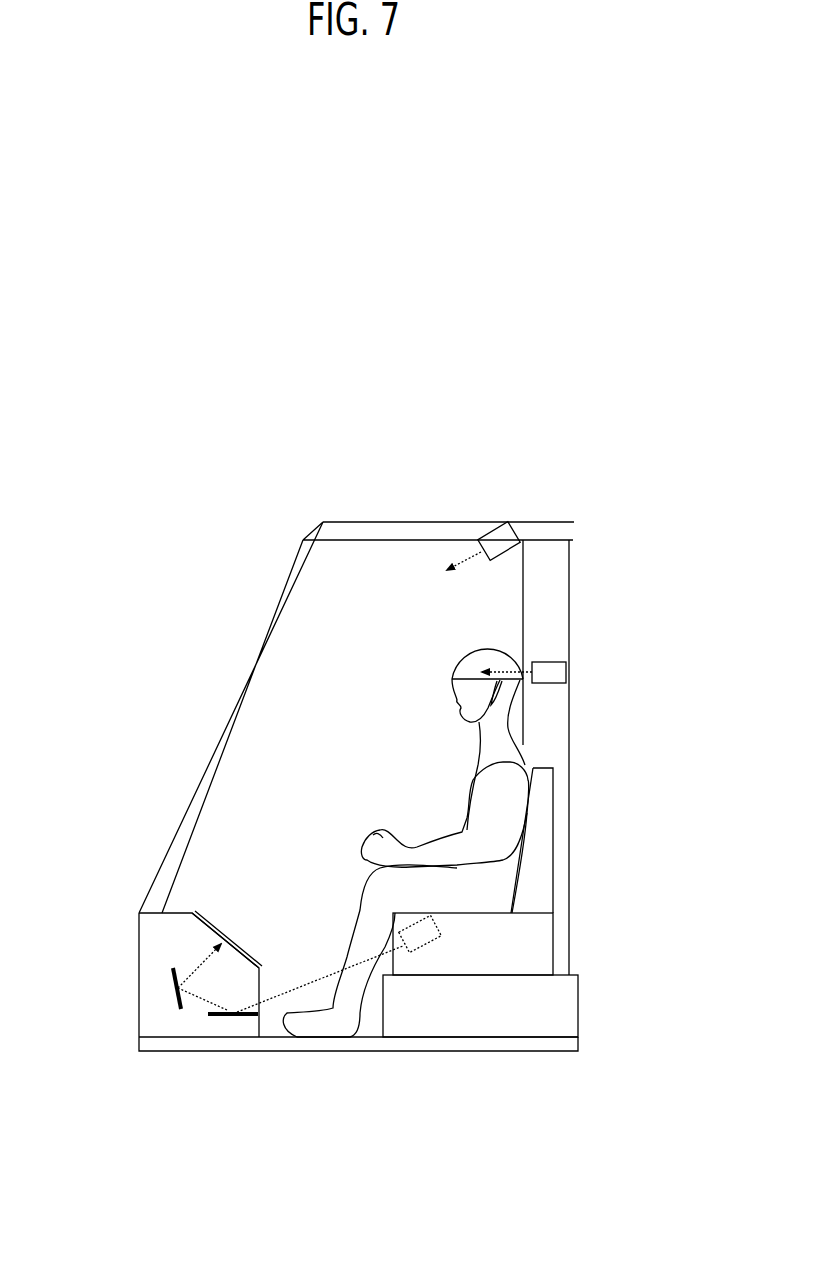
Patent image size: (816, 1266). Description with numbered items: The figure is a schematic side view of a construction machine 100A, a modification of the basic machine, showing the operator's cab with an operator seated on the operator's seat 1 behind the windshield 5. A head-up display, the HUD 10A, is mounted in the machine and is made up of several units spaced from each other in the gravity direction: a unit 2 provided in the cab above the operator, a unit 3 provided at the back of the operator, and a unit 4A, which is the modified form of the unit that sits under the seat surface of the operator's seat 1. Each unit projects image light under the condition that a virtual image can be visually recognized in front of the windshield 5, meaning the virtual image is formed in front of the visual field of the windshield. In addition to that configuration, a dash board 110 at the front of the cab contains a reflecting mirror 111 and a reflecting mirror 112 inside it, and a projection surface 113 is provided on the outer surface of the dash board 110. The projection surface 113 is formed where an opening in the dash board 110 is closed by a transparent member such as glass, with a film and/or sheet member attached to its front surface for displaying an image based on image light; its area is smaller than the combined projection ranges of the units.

The construction machine 100A is at (350, 480).
The windshield 5 is at (227, 738).
The operator's seat 1 is at (540, 963).
The unit 2 is at (510, 524).
The unit 3 is at (566, 672).
The unit 4A is at (440, 932).
The HUD 10A is at (558, 737).
The dash board 110 is at (215, 997).
The reflecting mirror 111 is at (236, 1016).
The reflecting mirror 112 is at (177, 1005).
The projection surface 113 is at (217, 932).